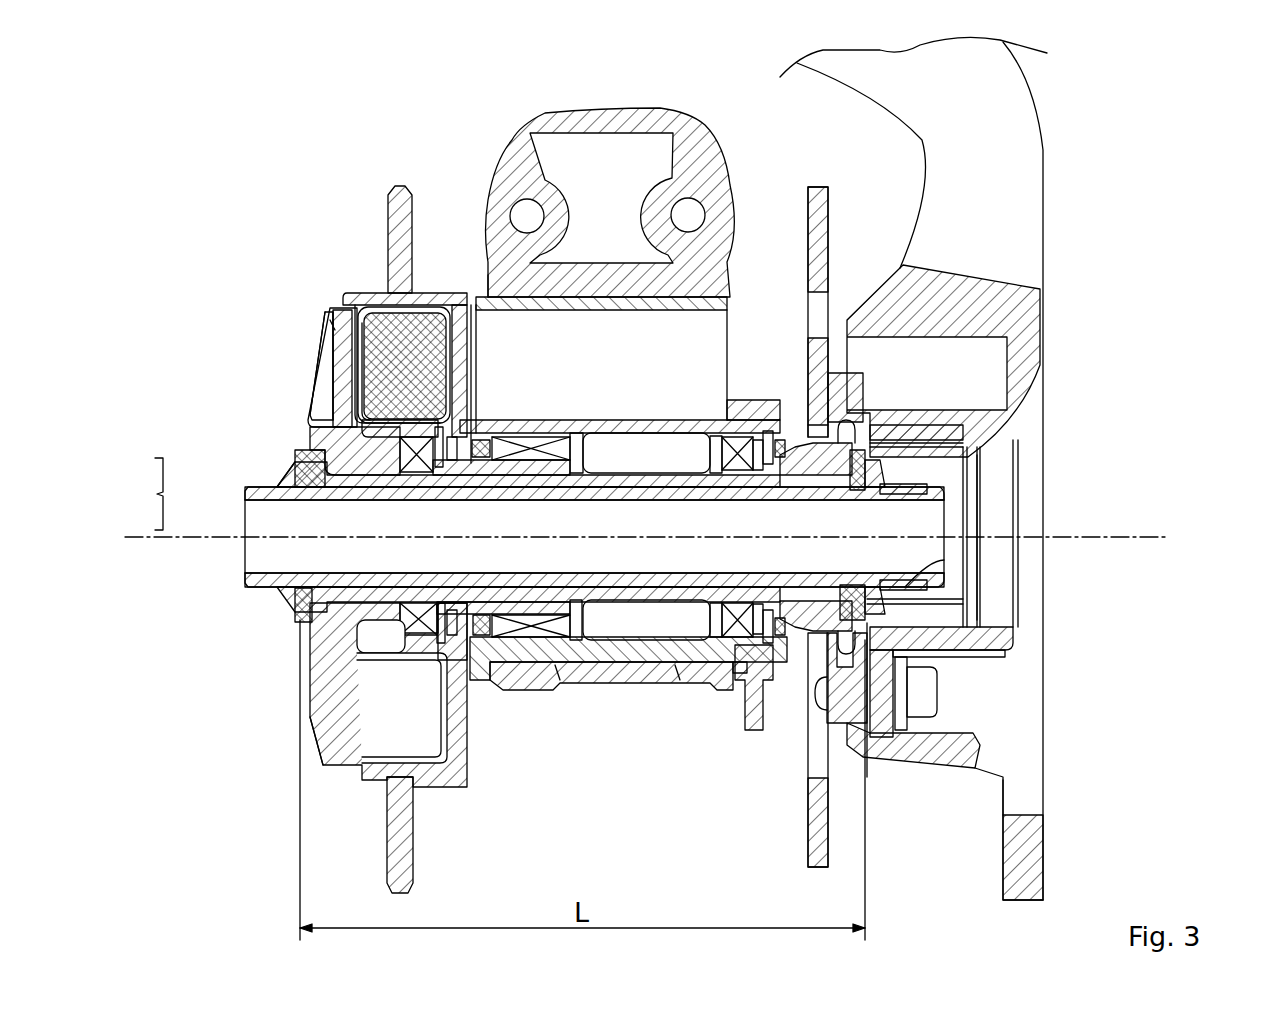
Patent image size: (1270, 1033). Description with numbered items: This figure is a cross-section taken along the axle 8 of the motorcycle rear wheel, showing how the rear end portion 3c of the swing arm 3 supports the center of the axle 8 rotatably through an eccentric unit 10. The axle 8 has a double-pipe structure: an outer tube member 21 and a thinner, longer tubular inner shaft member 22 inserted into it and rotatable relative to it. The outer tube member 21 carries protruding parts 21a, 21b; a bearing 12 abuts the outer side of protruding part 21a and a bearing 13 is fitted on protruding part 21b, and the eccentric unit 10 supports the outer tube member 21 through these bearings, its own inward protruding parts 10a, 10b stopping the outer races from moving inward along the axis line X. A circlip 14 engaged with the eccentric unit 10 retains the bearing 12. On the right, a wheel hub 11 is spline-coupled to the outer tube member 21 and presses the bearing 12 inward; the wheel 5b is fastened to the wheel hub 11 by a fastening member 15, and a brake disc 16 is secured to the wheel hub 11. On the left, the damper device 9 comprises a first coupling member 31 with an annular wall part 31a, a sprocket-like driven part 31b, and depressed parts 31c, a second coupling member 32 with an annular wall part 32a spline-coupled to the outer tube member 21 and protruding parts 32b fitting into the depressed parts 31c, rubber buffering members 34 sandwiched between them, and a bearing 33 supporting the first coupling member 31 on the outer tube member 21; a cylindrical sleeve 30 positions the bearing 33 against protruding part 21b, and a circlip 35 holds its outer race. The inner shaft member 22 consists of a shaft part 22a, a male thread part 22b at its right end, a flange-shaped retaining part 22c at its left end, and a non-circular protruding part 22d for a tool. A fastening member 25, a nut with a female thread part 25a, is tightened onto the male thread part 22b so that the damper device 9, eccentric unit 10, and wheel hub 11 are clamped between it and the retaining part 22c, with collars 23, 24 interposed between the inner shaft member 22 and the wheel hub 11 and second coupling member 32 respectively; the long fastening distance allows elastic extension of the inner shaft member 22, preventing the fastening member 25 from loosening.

The swing arm 3 is at (515, 113).
The rear end portion 3c is at (655, 110).
The wheel 5b is at (1048, 328).
The axle 8 is at (145, 494).
The damper device 9 is at (300, 770).
The eccentric unit 10 is at (620, 660).
The protruding part 10a is at (680, 660).
The protruding part 10b is at (562, 662).
The wheel hub 11 is at (863, 380).
The bearing 12 is at (715, 655).
The bearing 13 is at (530, 645).
The circlip 14 is at (757, 700).
The fastening member 15 is at (937, 690).
The brake disc 16 is at (830, 197).
The outer tube member 21 is at (300, 512).
The protruding part 21a is at (705, 470).
The protruding part 21b is at (548, 478).
The inner shaft member 22 is at (247, 490).
The shaft part 22a is at (640, 478).
The male thread part 22b is at (900, 475).
The retaining part 22c is at (292, 462).
The protruding part 22d is at (262, 600).
The collar 23 is at (905, 430).
The collar 24 is at (300, 460).
The fastening member 25 is at (930, 462).
The female thread part 25a is at (950, 548).
The sleeve 30 is at (462, 700).
The first coupling member 31 is at (480, 303).
The annular wall part 31a is at (478, 345).
The driven part 31b is at (388, 285).
The depressed part 31c is at (340, 305).
The second coupling member 32 is at (300, 407).
The annular wall part 32a is at (322, 405).
The protruding part 32b is at (392, 785).
The bearing 33 is at (420, 425).
The buffering member 34 is at (366, 362).
The circlip 35 is at (315, 725).
The axis line X is at (1150, 540).